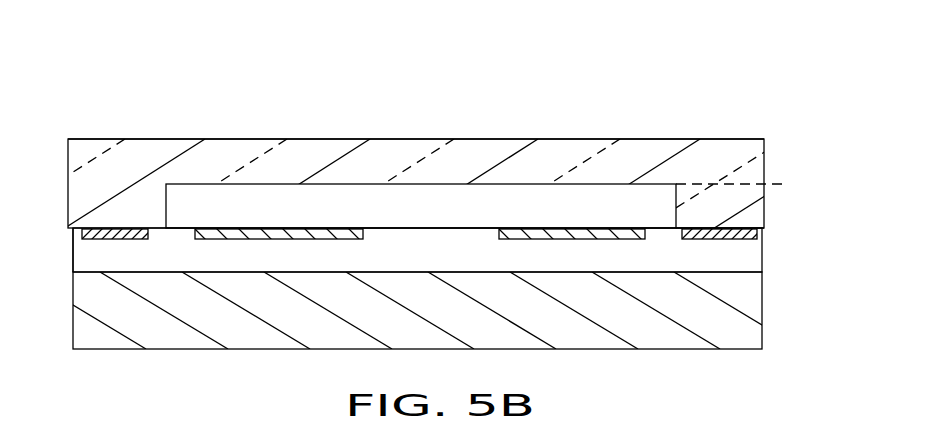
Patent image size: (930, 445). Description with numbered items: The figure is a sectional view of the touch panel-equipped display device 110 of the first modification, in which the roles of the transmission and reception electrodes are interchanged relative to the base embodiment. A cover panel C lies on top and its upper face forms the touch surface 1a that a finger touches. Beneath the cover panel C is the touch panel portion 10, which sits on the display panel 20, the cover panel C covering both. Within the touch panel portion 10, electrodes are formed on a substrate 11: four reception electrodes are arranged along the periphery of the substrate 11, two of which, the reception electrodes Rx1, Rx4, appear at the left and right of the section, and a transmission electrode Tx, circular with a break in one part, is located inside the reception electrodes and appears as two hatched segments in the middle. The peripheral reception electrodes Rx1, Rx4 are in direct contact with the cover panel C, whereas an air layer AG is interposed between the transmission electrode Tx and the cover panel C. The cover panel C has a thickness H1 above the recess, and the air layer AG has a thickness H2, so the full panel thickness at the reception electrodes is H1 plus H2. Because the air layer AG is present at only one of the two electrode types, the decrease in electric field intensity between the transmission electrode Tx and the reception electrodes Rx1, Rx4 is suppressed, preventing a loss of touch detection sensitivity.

The touch panel-equipped display device 110 is at (452, 33).
The cover panel C is at (86, 170).
The air layer AG is at (430, 218).
The touch surface 1a is at (263, 138).
The touch panel portion 10 is at (773, 229).
The display panel 20 is at (773, 274).
The substrate 11 is at (82, 253).
The reception electrode Rx1 is at (100, 228).
The reception electrode Rx4 is at (698, 228).
The transmission electrode Tx is at (334, 228).
The thickness H1 is at (775, 141).
The thickness H2 is at (775, 187).